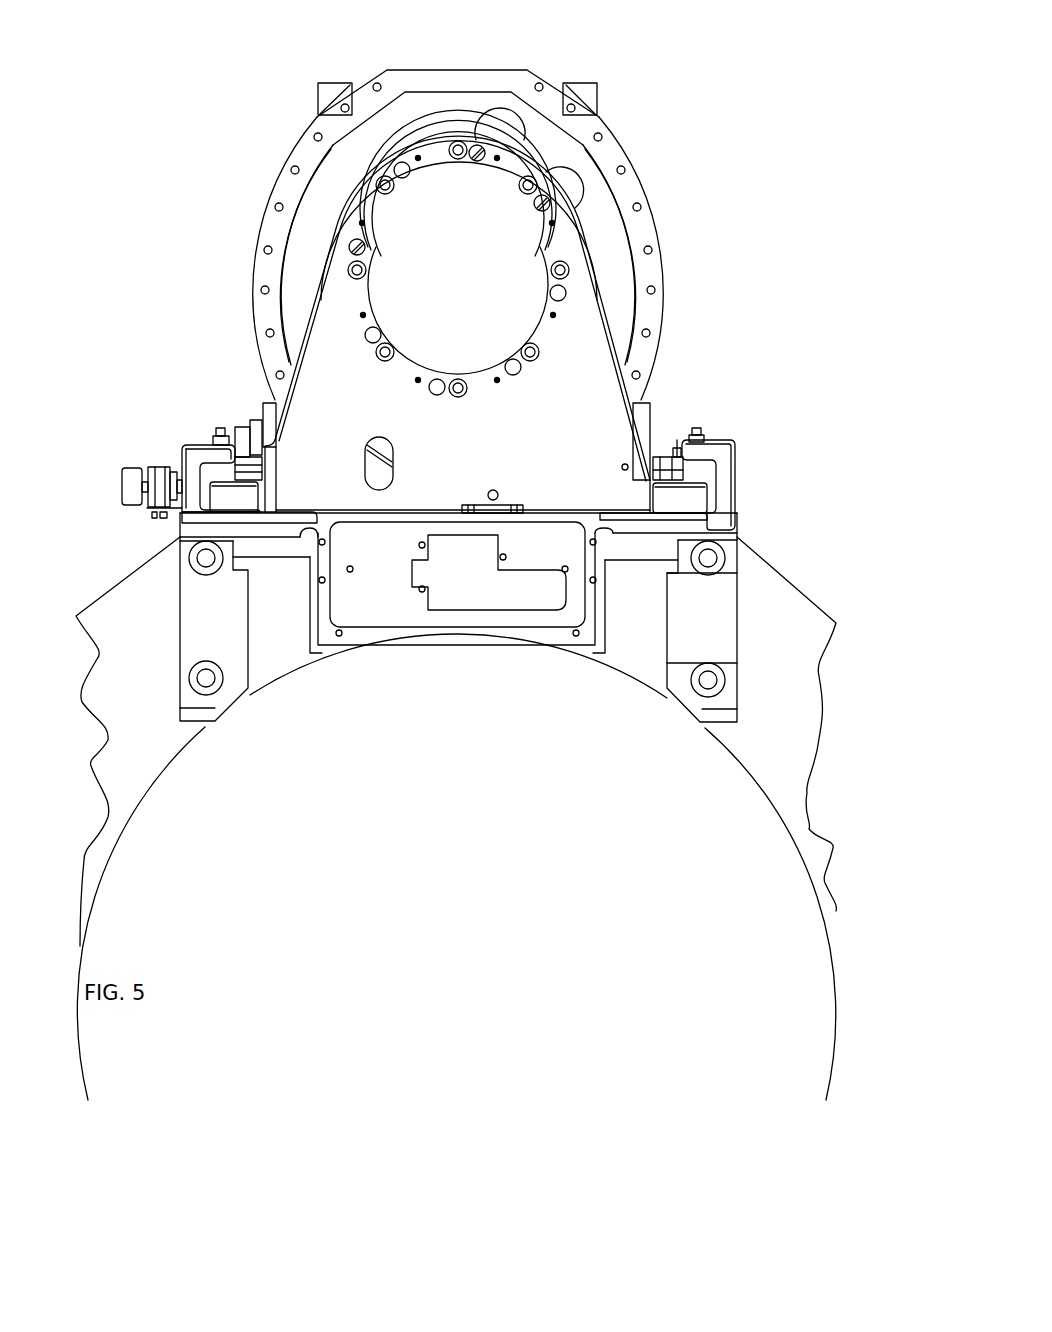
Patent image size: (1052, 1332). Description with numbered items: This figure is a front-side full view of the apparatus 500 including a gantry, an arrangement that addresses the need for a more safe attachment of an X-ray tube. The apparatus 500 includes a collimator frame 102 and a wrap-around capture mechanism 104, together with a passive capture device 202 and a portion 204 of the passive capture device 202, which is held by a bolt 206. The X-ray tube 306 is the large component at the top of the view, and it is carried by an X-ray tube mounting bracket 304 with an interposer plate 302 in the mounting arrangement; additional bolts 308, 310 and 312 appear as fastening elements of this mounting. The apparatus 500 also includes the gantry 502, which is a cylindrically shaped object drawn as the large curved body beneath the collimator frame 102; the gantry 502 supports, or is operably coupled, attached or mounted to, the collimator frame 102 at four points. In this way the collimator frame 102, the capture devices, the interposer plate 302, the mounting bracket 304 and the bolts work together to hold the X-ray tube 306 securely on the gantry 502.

The collimator frame 102 is at (194, 596).
The wrap-around capture mechanism 104 is at (188, 457).
The passive capture device 202 is at (210, 443).
The portion of the passive capture device 204 is at (218, 473).
The bolt 206 is at (218, 427).
The interposer plate 302 is at (148, 508).
The X-ray tube mounting bracket 304 is at (198, 510).
The X-ray tube 306 is at (455, 68).
The bolt 308 is at (677, 447).
The bolt 310 is at (655, 457).
The bolt 312 is at (243, 430).
The apparatus 500 is at (720, 945).
The gantry 502 is at (774, 612).